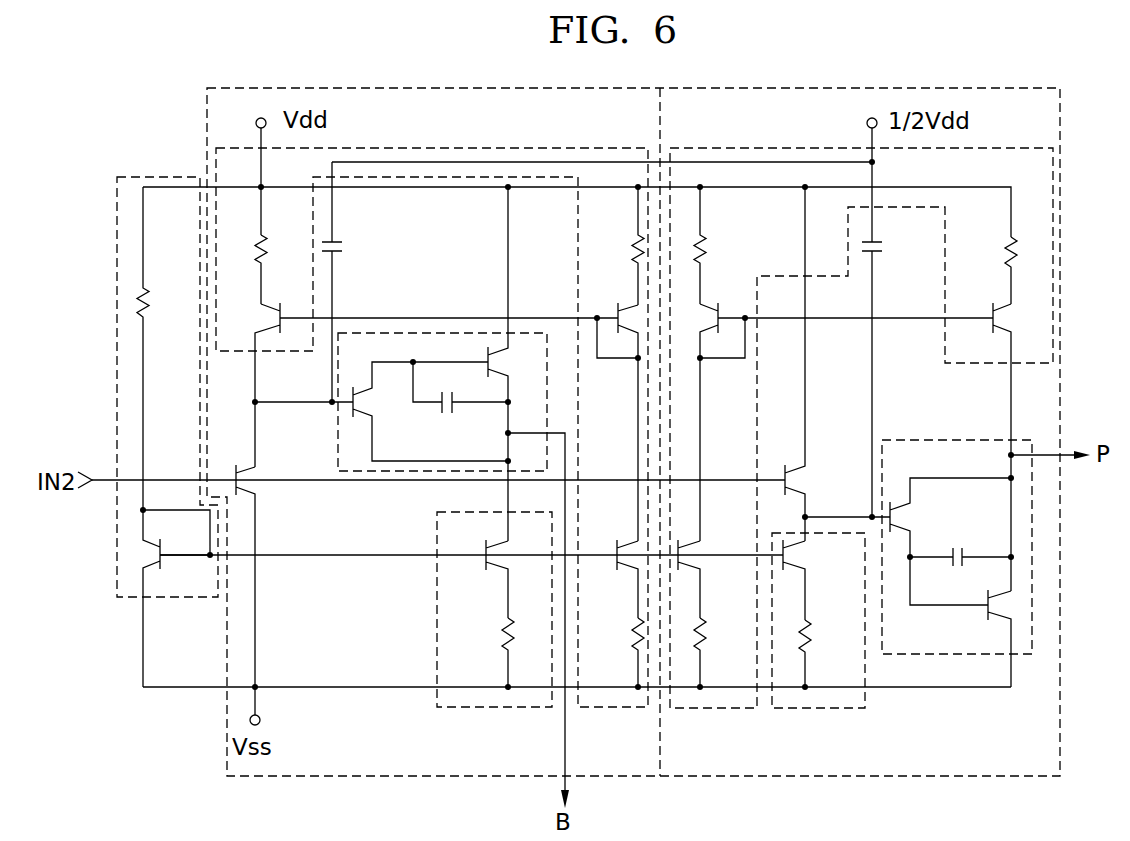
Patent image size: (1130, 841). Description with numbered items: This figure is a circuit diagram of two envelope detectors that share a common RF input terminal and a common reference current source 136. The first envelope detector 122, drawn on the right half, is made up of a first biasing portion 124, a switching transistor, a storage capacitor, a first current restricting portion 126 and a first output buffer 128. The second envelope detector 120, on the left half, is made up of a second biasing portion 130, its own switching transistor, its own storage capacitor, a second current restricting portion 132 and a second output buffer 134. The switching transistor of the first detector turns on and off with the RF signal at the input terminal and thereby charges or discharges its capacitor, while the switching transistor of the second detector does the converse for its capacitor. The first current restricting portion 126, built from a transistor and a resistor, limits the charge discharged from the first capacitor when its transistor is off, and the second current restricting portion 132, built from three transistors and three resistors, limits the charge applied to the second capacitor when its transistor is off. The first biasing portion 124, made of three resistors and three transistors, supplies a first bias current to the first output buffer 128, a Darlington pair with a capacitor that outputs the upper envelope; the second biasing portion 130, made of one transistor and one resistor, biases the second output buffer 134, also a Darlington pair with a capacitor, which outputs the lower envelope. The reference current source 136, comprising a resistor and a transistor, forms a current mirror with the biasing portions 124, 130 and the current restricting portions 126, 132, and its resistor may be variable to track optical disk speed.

The second envelope detector 120 is at (395, 776).
The first envelope detector 122 is at (785, 776).
The first biasing portion 124 is at (730, 147).
The first current restricting portion 126 is at (808, 708).
The first output buffer 128 is at (963, 440).
The second biasing portion 130 is at (492, 707).
The second current restricting portion 132 is at (473, 147).
The second output buffer 134 is at (455, 333).
The reference current source 136 is at (148, 177).